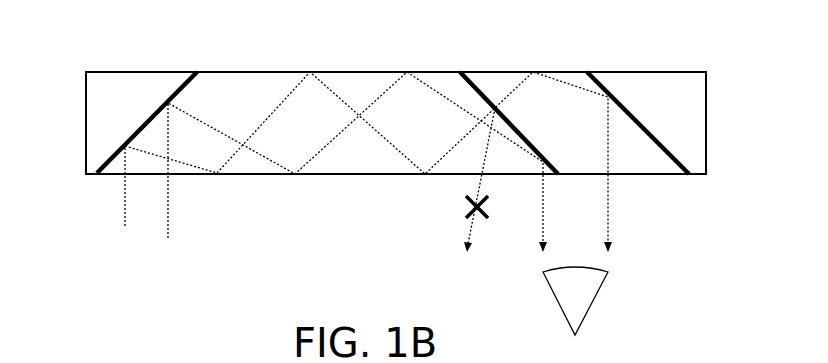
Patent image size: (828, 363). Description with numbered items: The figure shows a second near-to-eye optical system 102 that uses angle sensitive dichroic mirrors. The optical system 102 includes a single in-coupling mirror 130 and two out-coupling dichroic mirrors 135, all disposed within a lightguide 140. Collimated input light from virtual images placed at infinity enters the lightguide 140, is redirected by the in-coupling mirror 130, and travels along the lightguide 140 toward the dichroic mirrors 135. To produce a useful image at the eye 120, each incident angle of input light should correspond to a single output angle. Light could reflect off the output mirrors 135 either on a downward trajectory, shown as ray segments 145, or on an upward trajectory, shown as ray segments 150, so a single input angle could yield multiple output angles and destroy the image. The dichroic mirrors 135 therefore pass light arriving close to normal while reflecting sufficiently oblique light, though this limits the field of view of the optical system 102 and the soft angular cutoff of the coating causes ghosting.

The near-to-eye optical system 102 is at (215, 261).
The eye 120 is at (590, 307).
The in-coupling mirror 130 is at (147, 122).
The out-coupling dichroic mirrors 135 is at (483, 90).
The lightguide 140 is at (245, 72).
The ray segments 145 is at (422, 82).
The ray segments 150 is at (457, 143).